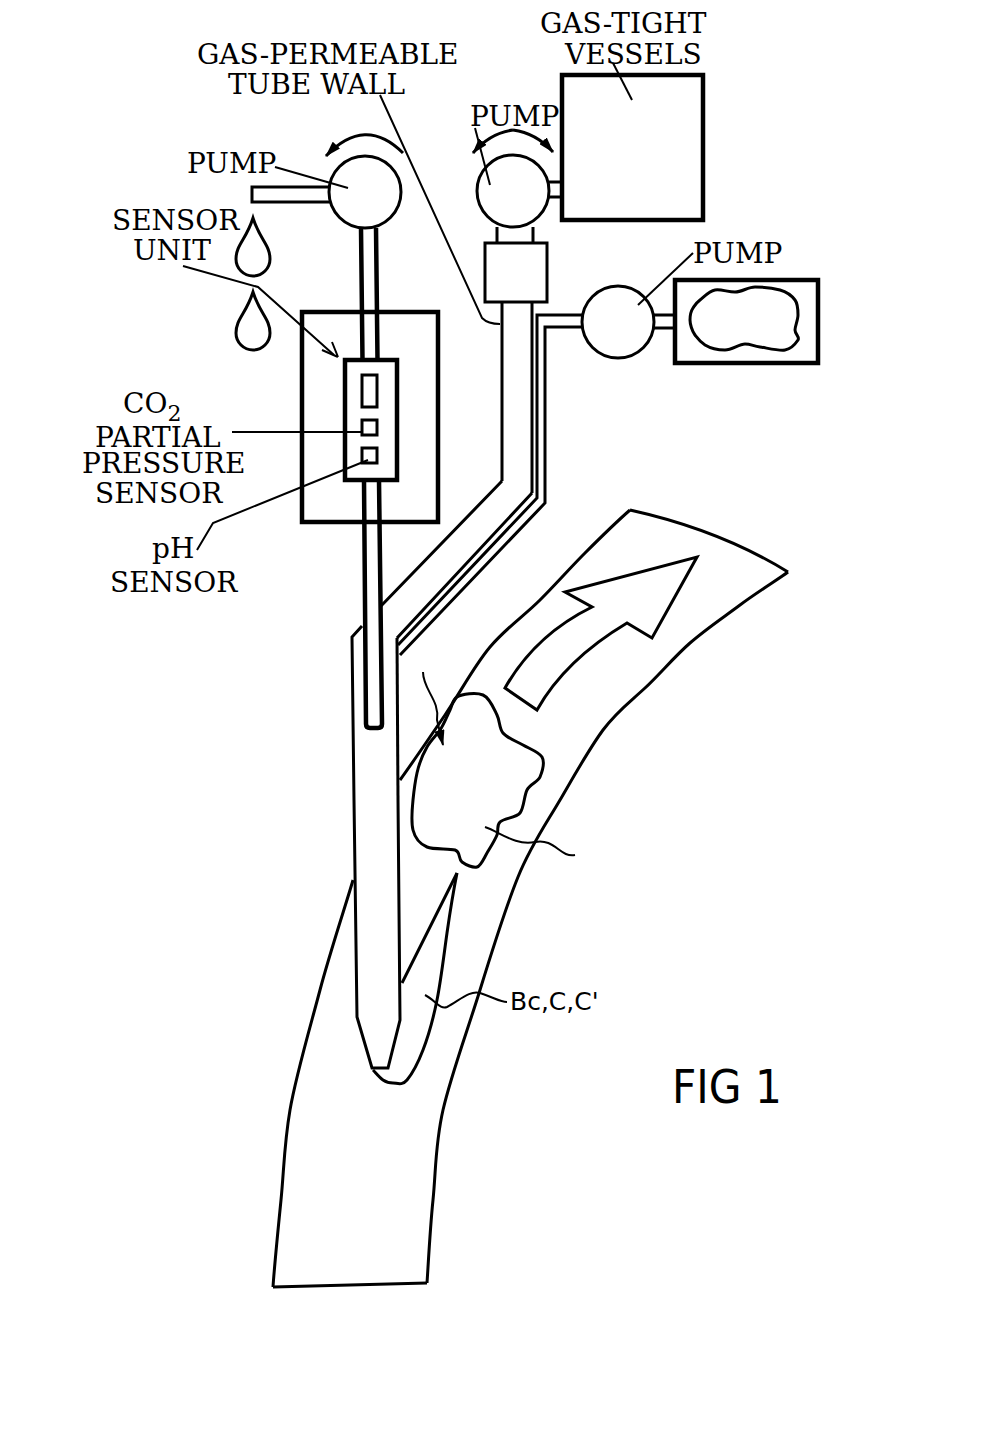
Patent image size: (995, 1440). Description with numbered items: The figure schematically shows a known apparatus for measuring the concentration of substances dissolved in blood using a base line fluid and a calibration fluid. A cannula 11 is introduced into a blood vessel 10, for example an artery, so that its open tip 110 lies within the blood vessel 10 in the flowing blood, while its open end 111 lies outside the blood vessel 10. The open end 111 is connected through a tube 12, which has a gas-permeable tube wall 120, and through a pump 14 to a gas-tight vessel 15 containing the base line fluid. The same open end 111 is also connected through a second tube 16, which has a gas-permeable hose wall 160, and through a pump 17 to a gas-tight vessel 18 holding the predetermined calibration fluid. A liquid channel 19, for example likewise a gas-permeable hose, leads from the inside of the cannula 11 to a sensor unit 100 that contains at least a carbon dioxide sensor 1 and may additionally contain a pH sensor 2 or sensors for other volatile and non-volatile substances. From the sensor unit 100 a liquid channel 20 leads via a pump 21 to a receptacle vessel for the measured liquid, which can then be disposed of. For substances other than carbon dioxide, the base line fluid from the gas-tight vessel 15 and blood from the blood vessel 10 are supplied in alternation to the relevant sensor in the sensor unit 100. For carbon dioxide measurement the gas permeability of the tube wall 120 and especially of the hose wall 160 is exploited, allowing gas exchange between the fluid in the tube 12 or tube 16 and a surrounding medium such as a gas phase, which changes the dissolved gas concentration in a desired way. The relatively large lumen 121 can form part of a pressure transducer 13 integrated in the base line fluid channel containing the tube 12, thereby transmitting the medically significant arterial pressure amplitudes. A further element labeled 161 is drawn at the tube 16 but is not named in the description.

The CO2 sensor 1 is at (368, 427).
The pH sensor 2 is at (368, 455).
The blood vessel 10 is at (600, 743).
The cannula 11 is at (318, 895).
The tube (hose) 12 is at (466, 452).
The pressure transducer 13 is at (548, 271).
The pump 14 is at (476, 186).
The gas-tight vessel 15 is at (703, 118).
The tube (hose) 16 is at (563, 485).
The pump 17 is at (636, 286).
The gas-tight vessel 18 is at (800, 278).
The liquid channel 19 is at (360, 568).
The liquid channel 20 is at (290, 204).
The pump 21 is at (323, 176).
The sensor unit 100 is at (291, 466).
The open tip 110 is at (370, 1081).
The open end 111 is at (352, 636).
The gas-permeable tube wall 120 is at (500, 331).
The lumen 121 is at (388, 540).
The gas-permeable hose wall 160 is at (538, 415).
The tube lumen 161 is at (490, 453).